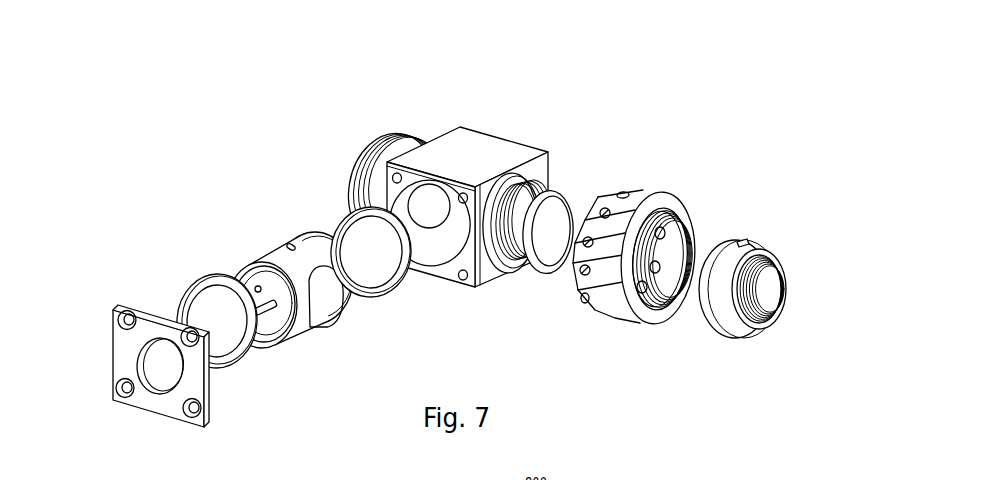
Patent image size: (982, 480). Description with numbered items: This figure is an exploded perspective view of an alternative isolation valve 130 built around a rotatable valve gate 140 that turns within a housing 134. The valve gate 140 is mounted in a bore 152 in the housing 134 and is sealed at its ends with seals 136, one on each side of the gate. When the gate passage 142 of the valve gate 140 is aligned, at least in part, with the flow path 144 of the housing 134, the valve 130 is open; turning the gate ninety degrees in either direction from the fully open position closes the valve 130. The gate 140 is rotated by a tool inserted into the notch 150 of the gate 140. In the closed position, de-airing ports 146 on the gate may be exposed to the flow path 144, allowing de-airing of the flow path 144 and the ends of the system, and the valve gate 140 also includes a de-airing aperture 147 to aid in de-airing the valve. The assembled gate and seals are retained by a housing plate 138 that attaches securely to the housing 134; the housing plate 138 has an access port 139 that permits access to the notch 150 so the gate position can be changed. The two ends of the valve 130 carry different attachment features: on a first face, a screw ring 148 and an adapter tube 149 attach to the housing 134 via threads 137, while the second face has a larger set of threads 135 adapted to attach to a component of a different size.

The isolation valve 130 is at (674, 94).
The housing 134 is at (487, 145).
The threads 135 is at (410, 134).
The seals 136 is at (338, 212).
The threads 137 is at (554, 189).
The housing plate 138 is at (145, 320).
The access port 139 is at (148, 384).
The rotatable valve gate 140 is at (228, 277).
The gate passage 142 is at (346, 315).
The flow path 144 is at (561, 220).
The de-airing ports 146 is at (283, 253).
The de-airing aperture 147 is at (196, 281).
The screw ring 148 is at (653, 192).
The adapter tube 149 is at (760, 240).
The notch 150 is at (272, 317).
The bore 152 is at (438, 254).